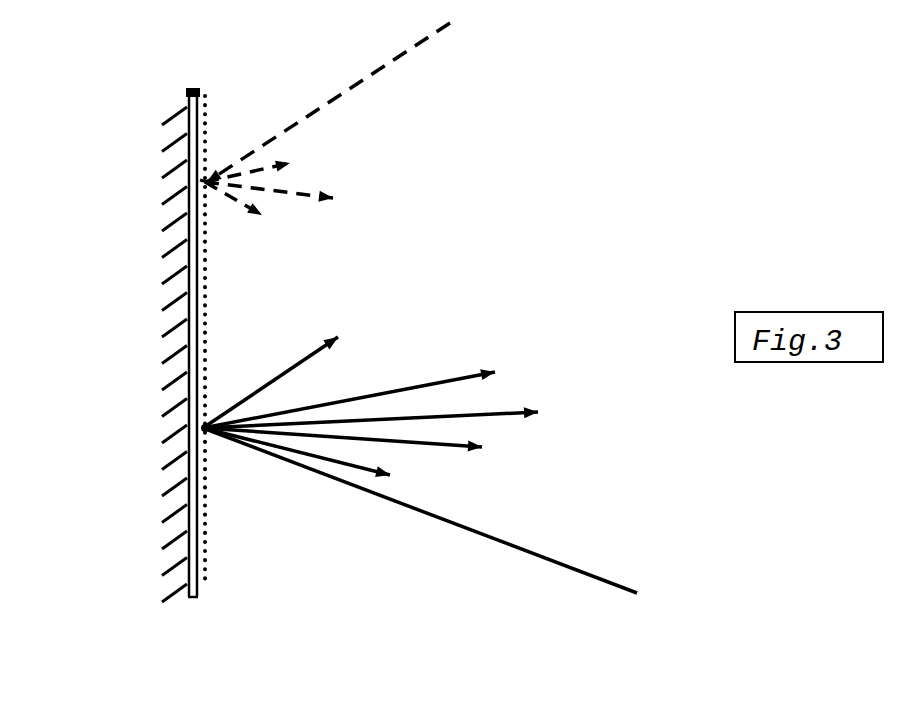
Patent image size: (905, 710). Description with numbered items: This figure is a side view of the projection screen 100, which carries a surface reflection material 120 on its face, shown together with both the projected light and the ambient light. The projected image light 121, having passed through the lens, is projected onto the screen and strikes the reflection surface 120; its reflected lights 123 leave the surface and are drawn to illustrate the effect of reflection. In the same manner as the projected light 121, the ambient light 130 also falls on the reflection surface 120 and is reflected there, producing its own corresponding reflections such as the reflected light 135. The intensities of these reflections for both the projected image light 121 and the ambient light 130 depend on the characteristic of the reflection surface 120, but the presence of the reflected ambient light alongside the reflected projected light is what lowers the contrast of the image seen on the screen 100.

The projection screen 100 is at (190, 95).
The surface reflection material 120 is at (207, 546).
The projected image light 121 is at (573, 574).
The reflected lights 123 is at (345, 327).
The ambient light 130 is at (430, 42).
The reflected light 135 is at (305, 163).